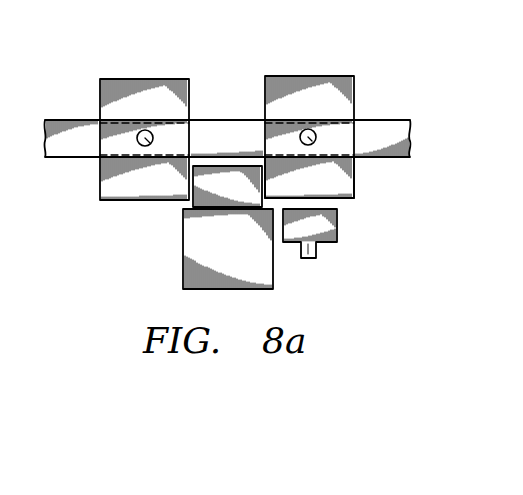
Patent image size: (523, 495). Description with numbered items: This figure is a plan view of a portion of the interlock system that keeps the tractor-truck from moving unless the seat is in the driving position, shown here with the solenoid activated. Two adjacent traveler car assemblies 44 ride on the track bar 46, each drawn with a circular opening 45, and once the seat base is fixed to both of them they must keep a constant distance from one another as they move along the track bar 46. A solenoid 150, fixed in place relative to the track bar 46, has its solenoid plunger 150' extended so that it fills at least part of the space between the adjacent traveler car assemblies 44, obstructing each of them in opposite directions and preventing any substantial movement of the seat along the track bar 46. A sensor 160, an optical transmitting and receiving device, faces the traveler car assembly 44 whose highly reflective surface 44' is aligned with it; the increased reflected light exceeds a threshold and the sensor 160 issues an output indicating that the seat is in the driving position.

The traveler car assembly 44 is at (227, 113).
The highly reflective surface 44' is at (339, 180).
The fastener hole 45 is at (151, 147).
The track bar 46 is at (67, 158).
The solenoid 150 is at (195, 251).
The solenoid plunger 150' is at (227, 144).
The sensor 160 is at (338, 229).